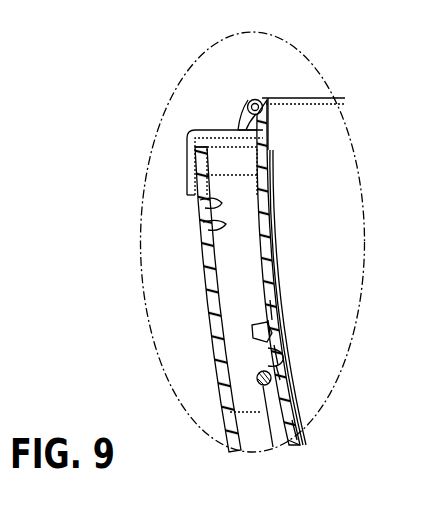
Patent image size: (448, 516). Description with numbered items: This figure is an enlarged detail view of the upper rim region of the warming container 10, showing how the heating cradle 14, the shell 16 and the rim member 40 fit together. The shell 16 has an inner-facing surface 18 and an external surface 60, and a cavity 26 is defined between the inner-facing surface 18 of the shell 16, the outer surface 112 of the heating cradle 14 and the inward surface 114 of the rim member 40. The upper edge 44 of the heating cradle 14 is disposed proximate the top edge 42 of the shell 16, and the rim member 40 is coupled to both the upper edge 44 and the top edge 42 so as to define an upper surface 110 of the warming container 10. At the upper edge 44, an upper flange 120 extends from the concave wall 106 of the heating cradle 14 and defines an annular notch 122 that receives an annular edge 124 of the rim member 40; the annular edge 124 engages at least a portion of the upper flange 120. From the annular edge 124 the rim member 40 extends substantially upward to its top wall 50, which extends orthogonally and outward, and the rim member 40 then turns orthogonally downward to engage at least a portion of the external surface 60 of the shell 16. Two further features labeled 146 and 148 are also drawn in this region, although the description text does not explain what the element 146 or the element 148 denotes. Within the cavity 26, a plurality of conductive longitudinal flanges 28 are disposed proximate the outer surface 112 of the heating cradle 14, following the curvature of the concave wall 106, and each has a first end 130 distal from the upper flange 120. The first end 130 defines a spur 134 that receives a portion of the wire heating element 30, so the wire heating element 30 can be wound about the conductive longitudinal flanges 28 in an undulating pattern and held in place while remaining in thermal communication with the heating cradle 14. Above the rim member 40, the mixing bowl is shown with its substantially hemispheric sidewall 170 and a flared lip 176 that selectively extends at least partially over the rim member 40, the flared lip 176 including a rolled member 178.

The warming container 10 is at (126, 365).
The heating cradle 14 is at (297, 446).
The shell 16 is at (173, 248).
The inner-facing surface 18 is at (205, 203).
The cavity 26 is at (215, 226).
The conductive longitudinal flanges 28 is at (230, 412).
The wire heating element 30 is at (284, 382).
The rim member 40 is at (151, 99).
The top edge 42 is at (200, 166).
The upper edge 44 is at (290, 378).
The top wall 50 is at (205, 152).
The external surface 60 is at (200, 272).
The concave wall 106 is at (300, 433).
The upper surface 110 is at (192, 130).
The outer surface 112 is at (285, 360).
The inward surface 114 is at (205, 174).
The upper flange 120 is at (283, 338).
The annular notch 122 is at (280, 312).
The annular edge 124 is at (277, 297).
The first end 130 is at (258, 372).
The spur 134 is at (257, 383).
The web 146 is at (277, 243).
The seal 148 is at (246, 130).
The hemispheric sidewall 170 is at (310, 143).
The flared lip 176 is at (300, 97).
The rolled member 178 is at (252, 99).